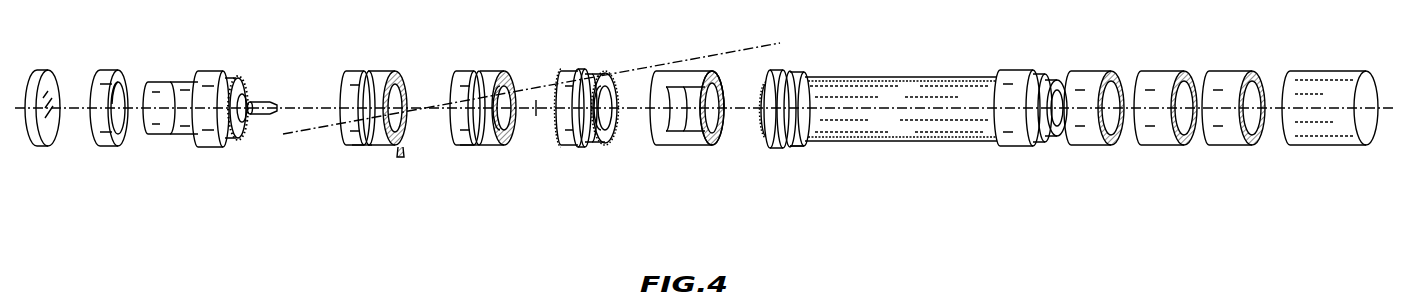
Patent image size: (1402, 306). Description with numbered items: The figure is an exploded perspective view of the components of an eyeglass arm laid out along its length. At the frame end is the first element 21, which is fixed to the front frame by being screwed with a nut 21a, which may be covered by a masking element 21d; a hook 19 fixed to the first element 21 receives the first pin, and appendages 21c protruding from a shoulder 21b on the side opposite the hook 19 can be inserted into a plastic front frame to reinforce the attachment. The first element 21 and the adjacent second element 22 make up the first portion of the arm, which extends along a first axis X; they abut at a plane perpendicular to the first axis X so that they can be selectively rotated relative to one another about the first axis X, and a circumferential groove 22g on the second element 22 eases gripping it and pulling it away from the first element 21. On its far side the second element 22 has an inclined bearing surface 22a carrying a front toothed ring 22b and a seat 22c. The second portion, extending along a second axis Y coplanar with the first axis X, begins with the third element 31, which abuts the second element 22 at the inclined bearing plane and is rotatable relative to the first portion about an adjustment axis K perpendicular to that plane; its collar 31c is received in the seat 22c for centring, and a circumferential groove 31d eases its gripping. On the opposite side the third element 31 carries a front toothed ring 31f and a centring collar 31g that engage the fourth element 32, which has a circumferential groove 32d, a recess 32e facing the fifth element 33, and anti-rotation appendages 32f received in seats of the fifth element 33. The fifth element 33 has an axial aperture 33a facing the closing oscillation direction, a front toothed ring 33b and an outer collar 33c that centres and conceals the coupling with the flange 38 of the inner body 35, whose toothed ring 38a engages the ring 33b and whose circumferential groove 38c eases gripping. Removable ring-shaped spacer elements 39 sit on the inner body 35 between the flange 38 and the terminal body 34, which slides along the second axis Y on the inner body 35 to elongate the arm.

The hook 19 is at (277, 108).
The first element 21 is at (193, 80).
The nut 21a is at (104, 70).
The shoulder 21b is at (230, 80).
The appendages 21c is at (210, 147).
The masking element 21d is at (47, 68).
The second element 22 is at (355, 70).
The inclined bearing surface 22a is at (403, 152).
The front toothed ring 22b is at (390, 70).
The seat 22c is at (405, 82).
The circumferential groove 22g is at (370, 148).
The third element 31 is at (467, 70).
The collar with a circular cross section 31c is at (510, 144).
The circumferential groove 31d is at (482, 70).
The front toothed ring 31f is at (517, 78).
The collar with a circular cross section 31g is at (480, 148).
The fourth element 32 is at (588, 70).
The circumferential groove 32d is at (577, 147).
The recess 32e is at (603, 147).
The appendages 32f is at (612, 75).
The fifth element 33 is at (692, 72).
The aperture 33a is at (655, 120).
The front toothed ring 33b is at (722, 132).
The collar with a circular cross section 33c is at (728, 72).
The flange 38 is at (797, 70).
The front toothed ring 38a is at (762, 100).
The circumferential groove 38c is at (800, 150).
The inner body 35 is at (925, 77).
The ring-shaped spacer elements 39 is at (1030, 67).
The terminal body 34 is at (1307, 68).
The first axis X is at (293, 113).
The second axis Y is at (533, 110).
The adjustment axis K is at (534, 106).